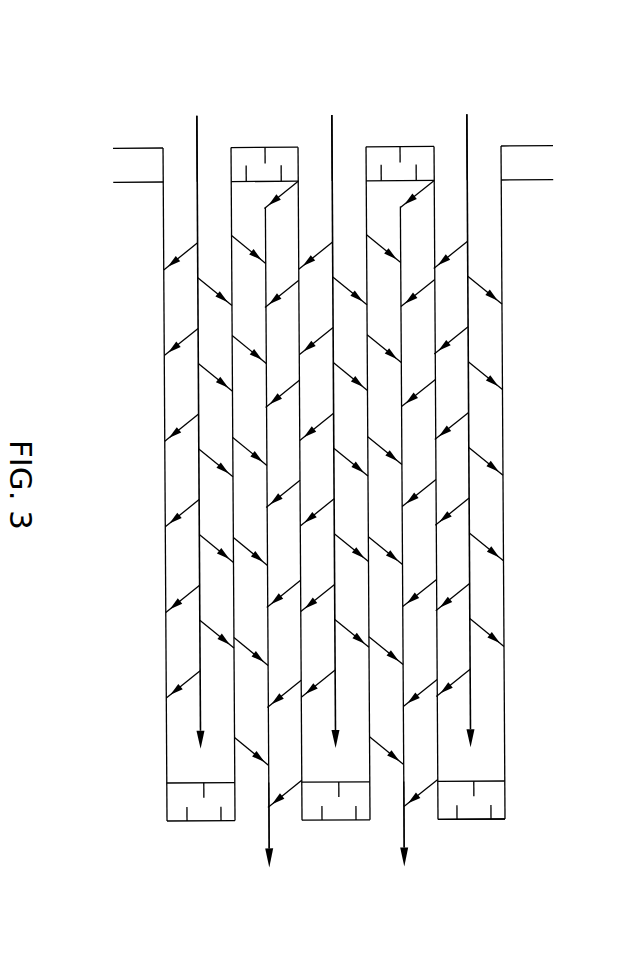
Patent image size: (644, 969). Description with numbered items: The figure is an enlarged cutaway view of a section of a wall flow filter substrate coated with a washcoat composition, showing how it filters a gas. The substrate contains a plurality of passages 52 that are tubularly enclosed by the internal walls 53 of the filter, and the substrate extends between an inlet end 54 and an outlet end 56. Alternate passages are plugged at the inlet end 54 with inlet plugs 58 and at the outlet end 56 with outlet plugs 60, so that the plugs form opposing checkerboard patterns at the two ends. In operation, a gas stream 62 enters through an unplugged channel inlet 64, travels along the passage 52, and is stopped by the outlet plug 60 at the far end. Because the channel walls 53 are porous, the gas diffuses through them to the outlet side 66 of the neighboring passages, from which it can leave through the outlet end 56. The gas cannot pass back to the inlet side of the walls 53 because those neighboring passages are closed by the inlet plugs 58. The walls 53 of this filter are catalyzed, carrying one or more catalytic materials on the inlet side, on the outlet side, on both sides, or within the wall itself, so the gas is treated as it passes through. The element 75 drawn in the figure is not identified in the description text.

The tube 52 is at (199, 184).
The flow passage 53 is at (302, 453).
The upper header 54 is at (550, 123).
The lower header 56 is at (512, 833).
The inlet chamber 58 is at (133, 149).
The outlet chamber 60 is at (200, 821).
The flow path 62 is at (334, 116).
The inlet opening 64 is at (227, 173).
The outlet opening 66 is at (262, 806).
The baffle 75 is at (165, 467).